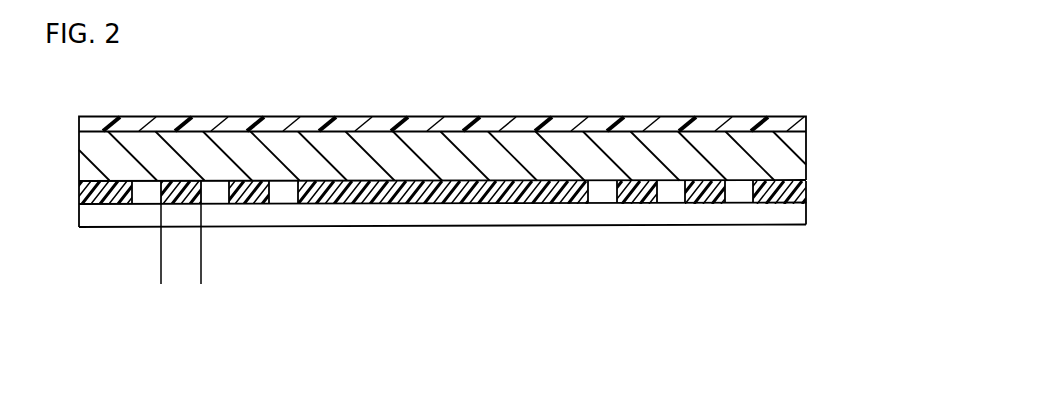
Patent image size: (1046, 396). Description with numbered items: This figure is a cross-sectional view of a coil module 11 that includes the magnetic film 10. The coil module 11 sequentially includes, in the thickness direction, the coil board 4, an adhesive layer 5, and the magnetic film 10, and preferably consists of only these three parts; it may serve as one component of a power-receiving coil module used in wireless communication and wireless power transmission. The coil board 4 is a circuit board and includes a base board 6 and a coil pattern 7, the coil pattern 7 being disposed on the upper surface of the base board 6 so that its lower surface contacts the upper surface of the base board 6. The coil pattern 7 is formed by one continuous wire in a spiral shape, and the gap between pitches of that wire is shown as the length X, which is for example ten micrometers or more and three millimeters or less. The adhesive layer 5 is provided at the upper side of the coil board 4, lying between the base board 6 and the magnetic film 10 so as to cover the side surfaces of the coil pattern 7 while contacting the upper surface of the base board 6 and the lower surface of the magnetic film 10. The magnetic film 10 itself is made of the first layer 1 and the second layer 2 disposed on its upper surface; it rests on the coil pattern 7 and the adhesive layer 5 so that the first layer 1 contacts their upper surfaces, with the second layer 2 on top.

The magnetic film 10 is at (897, 72).
The second layer 2 is at (806, 122).
The first layer 1 is at (806, 158).
The adhesive layer 5 is at (806, 192).
The coil board 4 is at (897, 202).
The coil pattern 7 is at (740, 203).
The base board 6 is at (782, 225).
The gap of the wire X is at (200, 273).
The coil module 11 is at (463, 366).